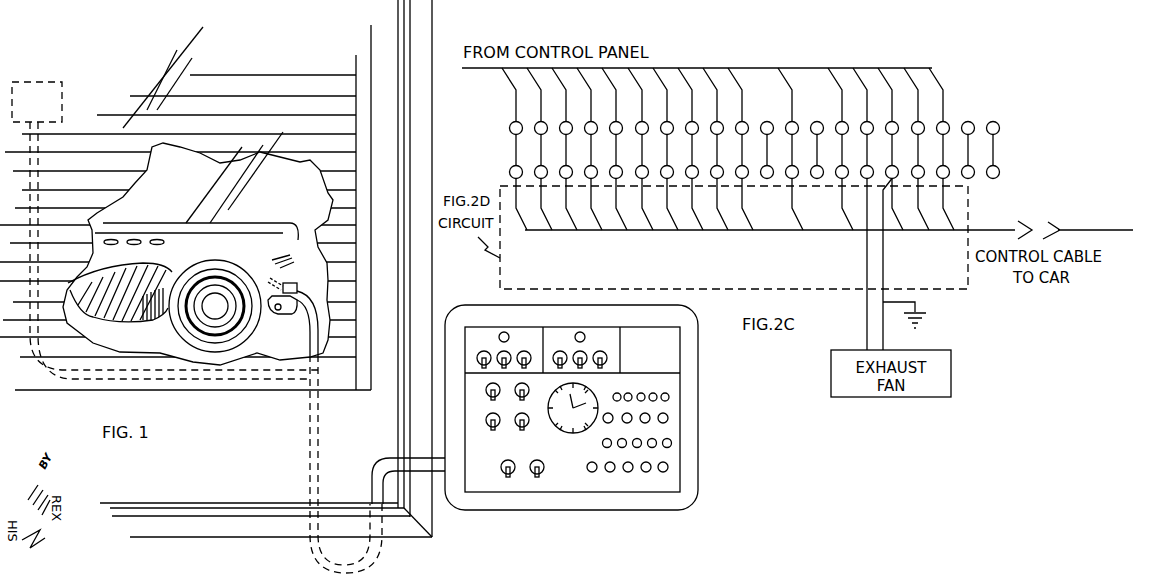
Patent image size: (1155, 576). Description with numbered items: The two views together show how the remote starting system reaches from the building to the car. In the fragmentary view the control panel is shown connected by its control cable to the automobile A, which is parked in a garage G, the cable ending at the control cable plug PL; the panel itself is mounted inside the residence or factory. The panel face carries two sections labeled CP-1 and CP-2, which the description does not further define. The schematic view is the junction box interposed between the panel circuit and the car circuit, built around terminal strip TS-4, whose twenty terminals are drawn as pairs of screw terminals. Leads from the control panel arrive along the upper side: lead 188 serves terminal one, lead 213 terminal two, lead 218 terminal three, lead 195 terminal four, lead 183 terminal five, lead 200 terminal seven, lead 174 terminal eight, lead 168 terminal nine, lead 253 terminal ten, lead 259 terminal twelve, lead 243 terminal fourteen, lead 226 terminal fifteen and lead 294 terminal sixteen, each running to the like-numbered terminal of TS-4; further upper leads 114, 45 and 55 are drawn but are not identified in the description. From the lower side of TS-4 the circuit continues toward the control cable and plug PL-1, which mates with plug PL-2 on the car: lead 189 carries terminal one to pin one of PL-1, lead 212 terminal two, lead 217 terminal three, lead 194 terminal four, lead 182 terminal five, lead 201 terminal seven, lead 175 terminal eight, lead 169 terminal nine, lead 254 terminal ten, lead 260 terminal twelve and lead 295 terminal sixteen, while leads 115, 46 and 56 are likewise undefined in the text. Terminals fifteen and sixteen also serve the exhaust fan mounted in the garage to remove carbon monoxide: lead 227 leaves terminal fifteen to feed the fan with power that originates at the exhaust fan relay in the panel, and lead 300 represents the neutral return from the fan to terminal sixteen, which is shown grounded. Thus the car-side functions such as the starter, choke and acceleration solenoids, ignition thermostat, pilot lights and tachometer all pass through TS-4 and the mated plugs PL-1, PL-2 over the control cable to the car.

In FIG. 1, the garage G is at (258, 113).
In FIG. 1, the automobile A is at (240, 242).
In FIG. 1, the control cable plug PL is at (298, 290).
In FIG. 1, the control panel section 1 CP-1 is at (515, 335).
In FIG. 1, the control panel section 2 CP-2 is at (563, 338).
In FIG. 2C, the terminal strip TS-4 is at (766, 150).
In FIG. 2C, the plug PL-1 is at (1020, 228).
In FIG. 2C, the plug PL-2 is at (1066, 220).
In FIG. 2C, the lead 188 is at (512, 78).
In FIG. 2C, the lead 213 is at (537, 86).
In FIG. 2C, the lead 218 is at (562, 78).
In FIG. 2C, the lead 195 is at (587, 86).
In FIG. 2C, the lead 183 is at (612, 78).
In FIG. 2C, the conductor 114 is at (638, 86).
In FIG. 2C, the lead 200 is at (663, 78).
In FIG. 2C, the lead 174 is at (688, 86).
In FIG. 2C, the lead 168 is at (713, 78).
In FIG. 2C, the lead 253 is at (738, 76).
In FIG. 2C, the lead 259 is at (785, 70).
In FIG. 2C, the lead 243 is at (832, 74).
In FIG. 2C, the lead 226 is at (858, 70).
In FIG. 2C, the lead 294 is at (888, 74).
In FIG. 2C, the conductor 45 is at (910, 70).
In FIG. 2C, the conductor 55 is at (938, 80).
In FIG. 2C, the lead 189 is at (522, 222).
In FIG. 2C, the lead 212 is at (548, 222).
In FIG. 2C, the lead 217 is at (573, 219).
In FIG. 2C, the lead 194 is at (598, 222).
In FIG. 2C, the lead 182 is at (624, 219).
In FIG. 2C, the conductor 115 is at (649, 222).
In FIG. 2C, the lead 201 is at (675, 219).
In FIG. 2C, the lead 175 is at (699, 222).
In FIG. 2C, the lead 169 is at (724, 219).
In FIG. 2C, the lead 254 is at (751, 222).
In FIG. 2C, the lead 260 is at (803, 219).
In FIG. 2C, the lead 227 is at (866, 254).
In FIG. 2C, the lead 300 is at (884, 283).
In FIG. 2C, the lead 295 is at (904, 219).
In FIG. 2C, the conductor 46 is at (927, 222).
In FIG. 2C, the conductor 56 is at (952, 219).